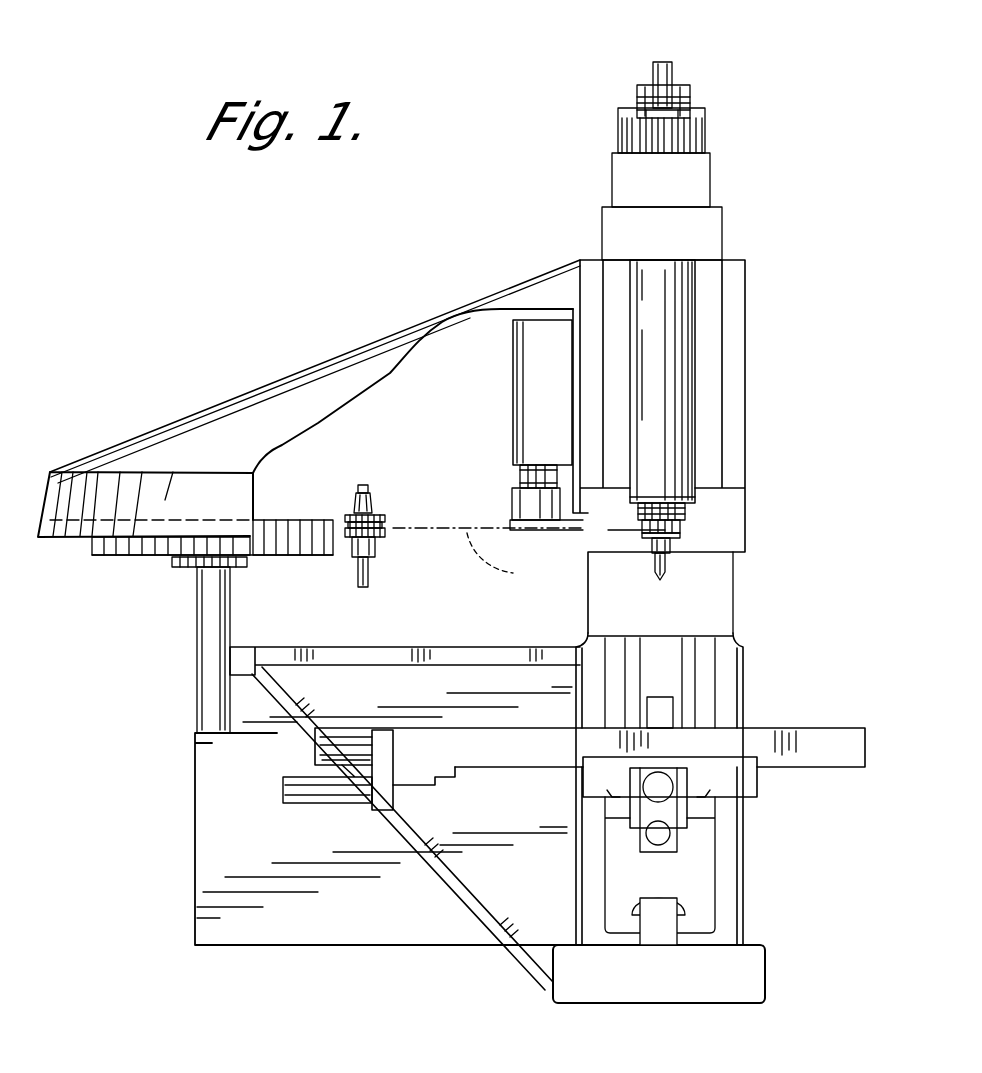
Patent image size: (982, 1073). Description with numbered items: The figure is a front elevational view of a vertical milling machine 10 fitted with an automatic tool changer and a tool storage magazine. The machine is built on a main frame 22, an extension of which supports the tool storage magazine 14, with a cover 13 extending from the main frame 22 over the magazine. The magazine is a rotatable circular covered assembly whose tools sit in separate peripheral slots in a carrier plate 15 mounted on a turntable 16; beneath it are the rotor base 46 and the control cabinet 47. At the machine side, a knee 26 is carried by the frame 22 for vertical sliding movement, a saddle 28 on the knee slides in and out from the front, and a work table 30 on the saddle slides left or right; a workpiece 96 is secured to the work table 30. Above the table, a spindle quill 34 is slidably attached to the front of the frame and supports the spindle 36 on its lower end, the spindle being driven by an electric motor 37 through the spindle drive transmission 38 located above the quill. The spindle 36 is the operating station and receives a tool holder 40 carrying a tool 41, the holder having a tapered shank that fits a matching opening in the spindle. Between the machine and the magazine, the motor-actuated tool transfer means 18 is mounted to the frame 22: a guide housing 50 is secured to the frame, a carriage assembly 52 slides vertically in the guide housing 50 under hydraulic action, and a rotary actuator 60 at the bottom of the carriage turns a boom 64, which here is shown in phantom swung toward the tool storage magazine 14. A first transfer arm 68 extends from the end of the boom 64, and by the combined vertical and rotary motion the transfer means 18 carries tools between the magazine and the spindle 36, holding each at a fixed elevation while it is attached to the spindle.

The vertical milling machine 10 is at (812, 441).
The cover 13 is at (312, 386).
The tool storage magazine 14 is at (151, 580).
The carrier plate 15 is at (307, 521).
The turntable 16 is at (283, 560).
The tool transfer means 18 is at (494, 415).
The main frame 22 is at (575, 358).
The knee 26 is at (705, 852).
The saddle 28 is at (745, 790).
The work table 30 is at (806, 728).
The spindle quill 34 is at (694, 377).
The spindle 36 is at (690, 511).
The electric motor 37 is at (630, 145).
The spindle drive transmission 38 is at (720, 88).
The tool holder 40 is at (716, 539).
The tool 41 is at (665, 571).
The rotor base 46 is at (205, 691).
The control cabinet 47 is at (197, 877).
The guide housing 50 is at (520, 352).
The carriage assembly 52 is at (525, 481).
The rotary actuator 60 is at (513, 507).
The boom 64 is at (577, 530).
The first transfer arm 68 is at (628, 533).
The workpiece 96 is at (662, 698).